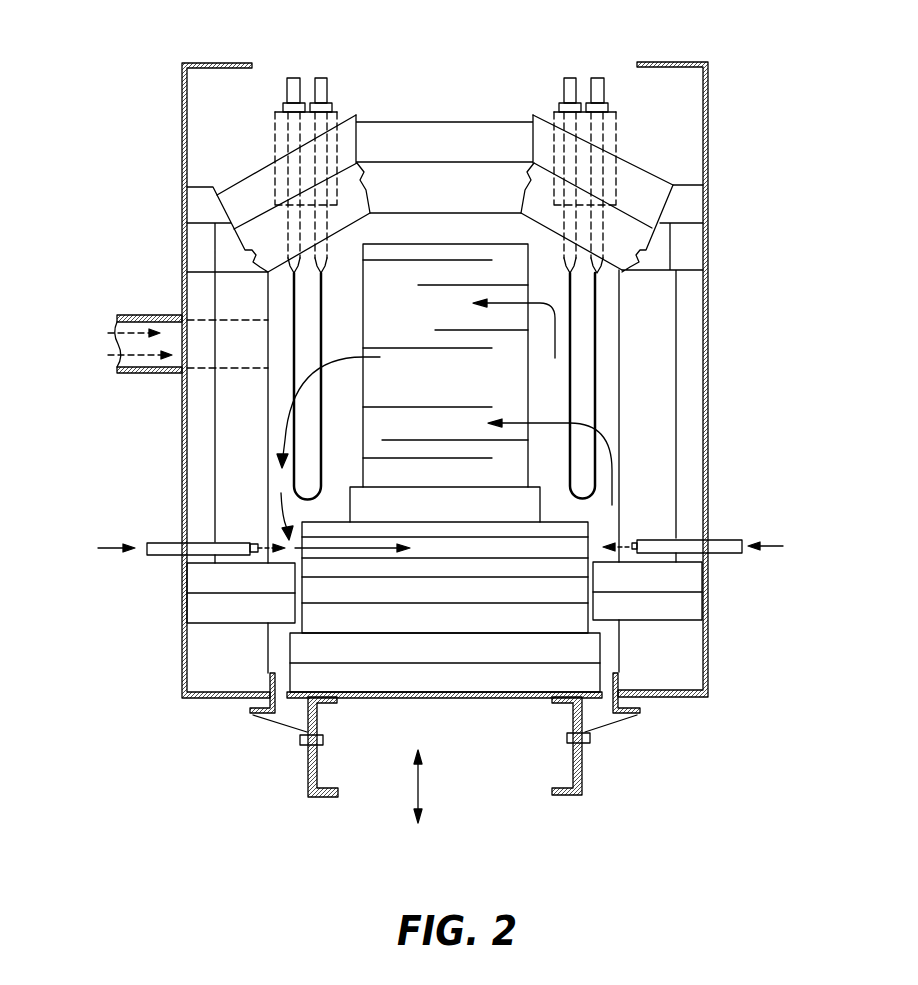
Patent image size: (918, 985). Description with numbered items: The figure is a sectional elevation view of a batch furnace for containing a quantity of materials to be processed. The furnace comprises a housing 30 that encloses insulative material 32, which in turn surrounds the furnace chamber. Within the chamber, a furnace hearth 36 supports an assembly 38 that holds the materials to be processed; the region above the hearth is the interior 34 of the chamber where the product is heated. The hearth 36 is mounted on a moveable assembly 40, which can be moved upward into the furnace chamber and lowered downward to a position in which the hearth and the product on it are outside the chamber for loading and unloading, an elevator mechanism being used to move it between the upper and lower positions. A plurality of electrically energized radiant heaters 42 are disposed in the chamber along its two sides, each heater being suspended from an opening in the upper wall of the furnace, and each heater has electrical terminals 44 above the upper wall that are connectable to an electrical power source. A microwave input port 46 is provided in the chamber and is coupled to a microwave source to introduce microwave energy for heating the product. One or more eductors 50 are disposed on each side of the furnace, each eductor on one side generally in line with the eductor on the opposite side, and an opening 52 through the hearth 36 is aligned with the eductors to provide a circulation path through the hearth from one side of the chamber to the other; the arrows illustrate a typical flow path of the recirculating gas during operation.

The housing 30 is at (708, 141).
The insulative material 32 is at (465, 192).
The heating cavity 34 is at (330, 314).
The furnace hearth 36 is at (490, 528).
The assembly 38 is at (405, 243).
The moveable assembly 40 is at (243, 775).
The radiant heater 42 is at (598, 325).
The electrical terminals 44 is at (595, 78).
The microwave input port 46 is at (155, 313).
The eductor 50 is at (225, 543).
The opening 52 is at (537, 548).